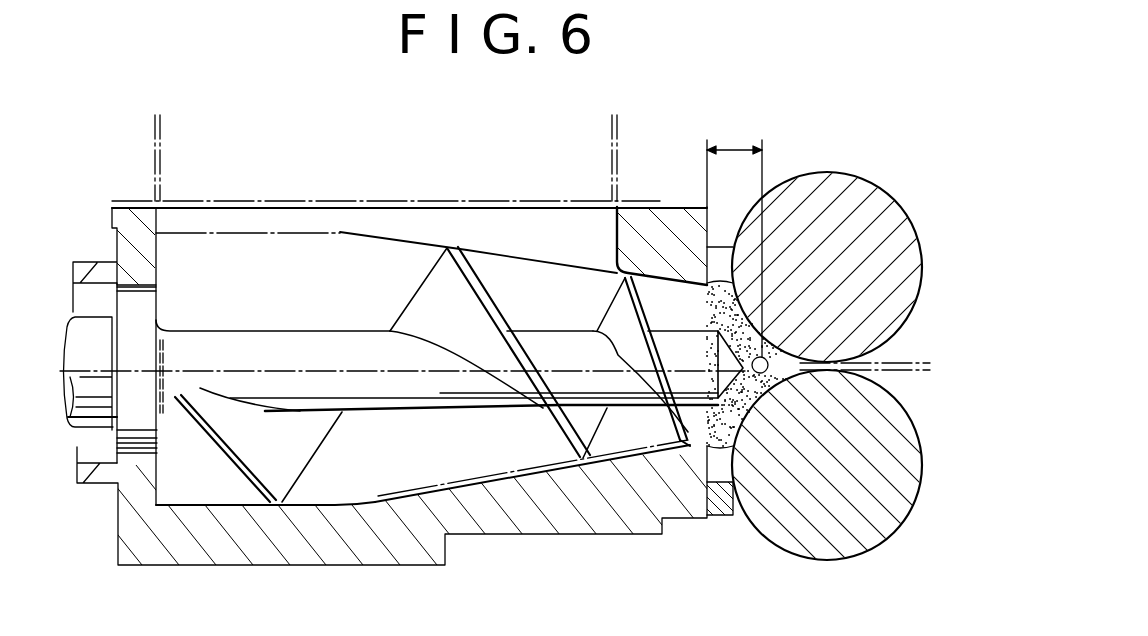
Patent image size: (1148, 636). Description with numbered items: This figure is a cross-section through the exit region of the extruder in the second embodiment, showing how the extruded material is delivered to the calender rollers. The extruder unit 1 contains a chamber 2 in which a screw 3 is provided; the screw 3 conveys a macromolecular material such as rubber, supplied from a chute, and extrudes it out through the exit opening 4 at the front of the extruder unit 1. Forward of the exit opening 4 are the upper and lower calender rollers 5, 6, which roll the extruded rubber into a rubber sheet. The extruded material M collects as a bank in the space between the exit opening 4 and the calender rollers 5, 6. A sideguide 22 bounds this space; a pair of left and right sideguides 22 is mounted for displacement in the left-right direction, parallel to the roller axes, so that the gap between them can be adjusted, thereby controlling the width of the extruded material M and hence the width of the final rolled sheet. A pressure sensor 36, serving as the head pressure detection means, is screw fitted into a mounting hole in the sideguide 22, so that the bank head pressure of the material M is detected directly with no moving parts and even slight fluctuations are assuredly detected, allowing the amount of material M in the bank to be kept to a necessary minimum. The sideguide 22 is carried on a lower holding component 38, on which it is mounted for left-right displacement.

The extruder unit 1 is at (680, 232).
The chamber 2 is at (498, 476).
The screw 3 is at (455, 300).
The exit opening 4 is at (693, 442).
The upper calender roller 5 is at (884, 194).
The lower calender roller 6 is at (870, 548).
The sideguide 22 is at (720, 266).
The pressure sensor 36 is at (770, 362).
The lower holding component 38 is at (721, 502).
The extruded material M is at (743, 393).